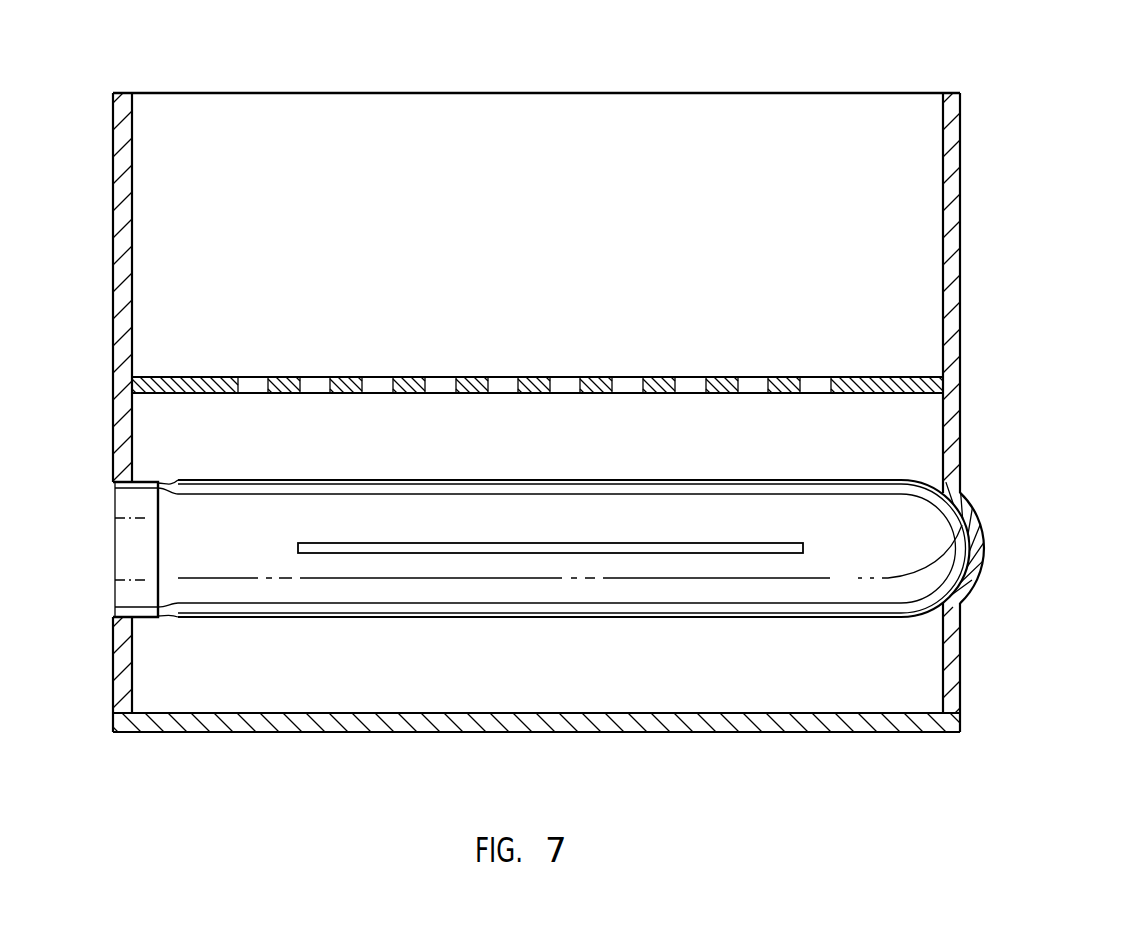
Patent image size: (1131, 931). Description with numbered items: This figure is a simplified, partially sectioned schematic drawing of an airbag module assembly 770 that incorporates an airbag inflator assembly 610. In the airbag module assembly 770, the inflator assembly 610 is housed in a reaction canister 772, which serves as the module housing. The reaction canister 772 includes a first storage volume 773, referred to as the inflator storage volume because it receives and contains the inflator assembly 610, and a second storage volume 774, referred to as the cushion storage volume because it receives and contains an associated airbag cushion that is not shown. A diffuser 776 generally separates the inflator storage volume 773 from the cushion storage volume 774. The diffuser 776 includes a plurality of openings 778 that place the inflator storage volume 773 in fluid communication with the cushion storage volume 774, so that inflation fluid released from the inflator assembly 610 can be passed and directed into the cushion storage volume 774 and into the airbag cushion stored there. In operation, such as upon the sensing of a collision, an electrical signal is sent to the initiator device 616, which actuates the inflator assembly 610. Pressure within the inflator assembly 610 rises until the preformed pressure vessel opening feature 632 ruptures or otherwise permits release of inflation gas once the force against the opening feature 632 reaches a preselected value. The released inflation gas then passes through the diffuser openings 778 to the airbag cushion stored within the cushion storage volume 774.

The airbag module assembly 770 is at (853, 83).
The reaction canister 772 is at (963, 325).
The first storage volume 773 is at (610, 678).
The second storage volume 774 is at (457, 128).
The diffuser 776 is at (226, 377).
The openings 778 is at (570, 379).
The initiator device 616 is at (127, 538).
The airbag inflator assembly 610 is at (822, 568).
The preformed pressure vessel opening feature 632 is at (400, 545).